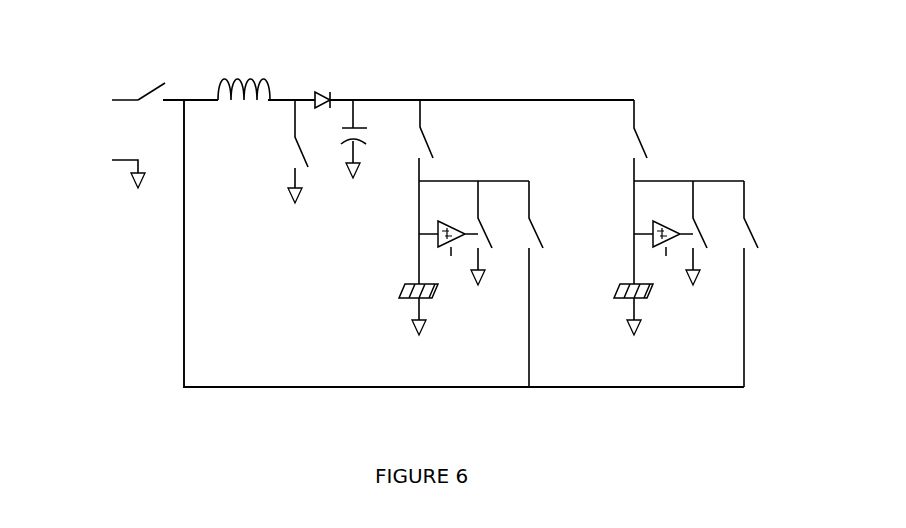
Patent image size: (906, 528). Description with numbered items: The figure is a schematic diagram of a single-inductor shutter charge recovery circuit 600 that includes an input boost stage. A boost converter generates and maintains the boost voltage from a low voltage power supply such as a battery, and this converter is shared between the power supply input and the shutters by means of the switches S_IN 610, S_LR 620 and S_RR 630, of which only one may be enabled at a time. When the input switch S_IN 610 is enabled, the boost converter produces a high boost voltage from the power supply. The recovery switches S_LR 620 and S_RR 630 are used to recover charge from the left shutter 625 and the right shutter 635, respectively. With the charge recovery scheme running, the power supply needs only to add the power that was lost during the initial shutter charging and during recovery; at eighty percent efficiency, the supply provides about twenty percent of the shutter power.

The LC shutter drive circuit 600 is at (246, 407).
The input switch S_IN 610 is at (152, 69).
The left recovery switch S_LR 620 is at (461, 243).
The left shutter 625 is at (425, 330).
The right recovery switch S_RR 630 is at (689, 243).
The right shutter 635 is at (642, 331).